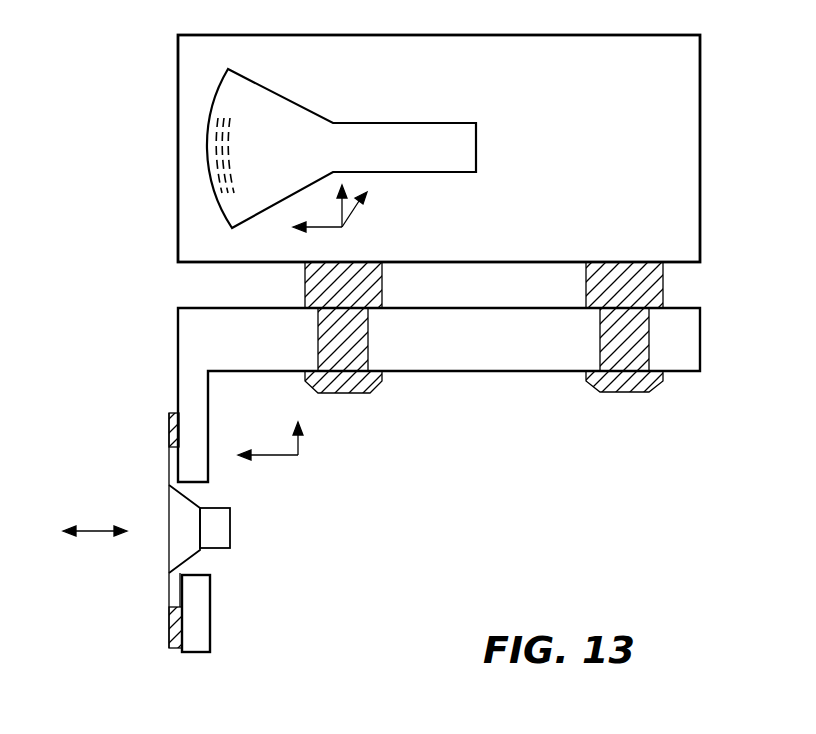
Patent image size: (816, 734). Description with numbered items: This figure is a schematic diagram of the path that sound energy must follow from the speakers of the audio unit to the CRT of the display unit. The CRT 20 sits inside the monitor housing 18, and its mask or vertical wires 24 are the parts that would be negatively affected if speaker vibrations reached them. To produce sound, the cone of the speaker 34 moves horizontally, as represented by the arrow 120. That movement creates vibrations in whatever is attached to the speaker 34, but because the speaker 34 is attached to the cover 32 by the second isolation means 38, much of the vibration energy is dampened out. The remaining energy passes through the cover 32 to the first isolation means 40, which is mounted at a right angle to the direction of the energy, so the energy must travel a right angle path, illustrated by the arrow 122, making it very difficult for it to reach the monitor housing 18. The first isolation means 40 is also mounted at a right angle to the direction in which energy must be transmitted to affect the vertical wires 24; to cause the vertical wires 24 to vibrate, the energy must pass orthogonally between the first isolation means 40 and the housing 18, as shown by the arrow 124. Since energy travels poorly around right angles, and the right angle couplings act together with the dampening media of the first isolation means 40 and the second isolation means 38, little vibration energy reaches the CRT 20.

The monitor housing 18 is at (700, 110).
The CRT 20 is at (365, 128).
The vertical wires 24 is at (217, 137).
The arrow 124 is at (352, 217).
The first isolation means 40 is at (383, 282).
The cover 32 is at (677, 362).
The second isolation means 38 is at (169, 428).
The speaker 34 is at (187, 552).
The arrow 122 is at (282, 455).
The arrow 120 is at (92, 530).